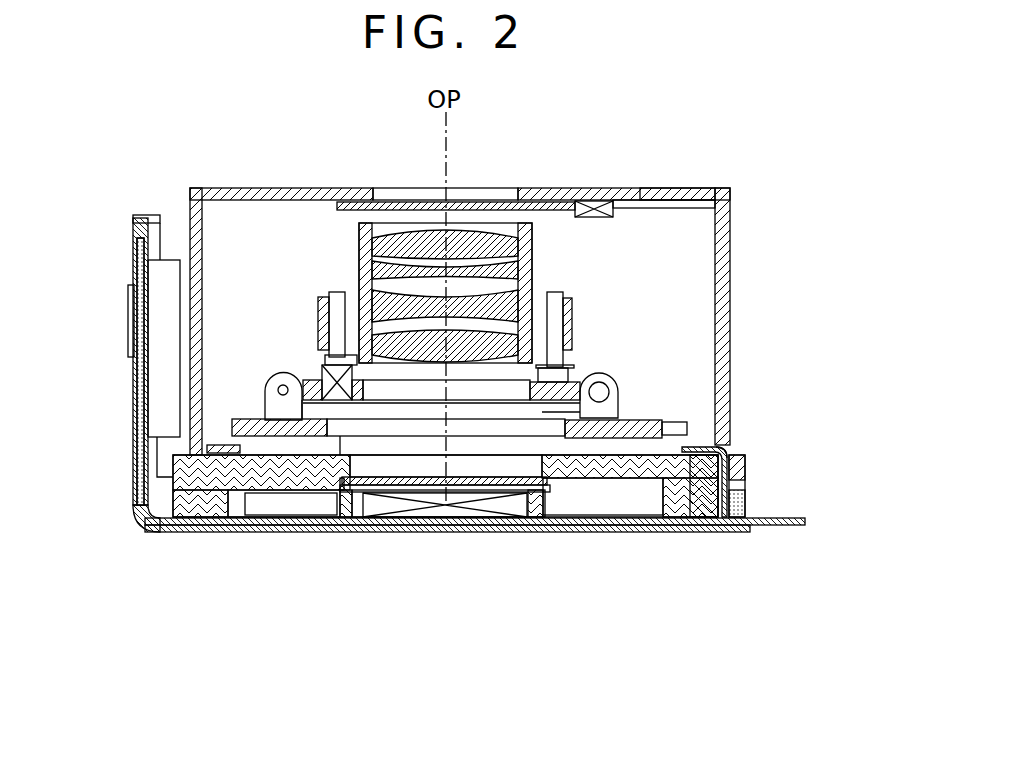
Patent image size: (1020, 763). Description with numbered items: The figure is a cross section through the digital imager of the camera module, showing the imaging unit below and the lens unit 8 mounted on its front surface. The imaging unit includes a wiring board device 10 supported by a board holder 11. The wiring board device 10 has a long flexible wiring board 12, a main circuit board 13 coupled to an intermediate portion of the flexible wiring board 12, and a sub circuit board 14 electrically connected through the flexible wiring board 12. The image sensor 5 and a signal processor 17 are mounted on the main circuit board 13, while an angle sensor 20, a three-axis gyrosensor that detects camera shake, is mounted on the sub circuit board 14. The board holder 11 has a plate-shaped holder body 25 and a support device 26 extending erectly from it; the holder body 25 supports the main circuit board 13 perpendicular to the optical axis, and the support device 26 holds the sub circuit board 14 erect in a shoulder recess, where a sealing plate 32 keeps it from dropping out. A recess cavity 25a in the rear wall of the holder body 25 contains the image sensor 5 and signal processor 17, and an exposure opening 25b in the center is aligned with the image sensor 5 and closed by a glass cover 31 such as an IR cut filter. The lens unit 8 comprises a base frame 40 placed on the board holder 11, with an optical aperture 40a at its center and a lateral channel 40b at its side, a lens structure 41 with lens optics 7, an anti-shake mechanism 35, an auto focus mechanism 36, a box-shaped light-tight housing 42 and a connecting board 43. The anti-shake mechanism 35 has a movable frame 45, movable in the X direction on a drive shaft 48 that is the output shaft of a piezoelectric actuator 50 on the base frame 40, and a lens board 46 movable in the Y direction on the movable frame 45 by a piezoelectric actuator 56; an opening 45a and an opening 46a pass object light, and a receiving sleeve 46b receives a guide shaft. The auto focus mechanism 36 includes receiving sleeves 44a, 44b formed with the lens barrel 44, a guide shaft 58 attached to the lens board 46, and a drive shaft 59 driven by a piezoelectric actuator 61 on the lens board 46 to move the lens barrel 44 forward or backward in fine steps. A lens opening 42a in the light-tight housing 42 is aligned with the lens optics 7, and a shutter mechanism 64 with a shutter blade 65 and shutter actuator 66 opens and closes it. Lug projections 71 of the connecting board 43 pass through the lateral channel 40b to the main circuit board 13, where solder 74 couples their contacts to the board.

The image sensor 5 is at (445, 492).
The lens optics 7 is at (413, 232).
The lens unit 8 is at (663, 180).
The wiring board device 10 is at (530, 548).
The board holder 11 is at (160, 493).
The flexible wiring board 12 is at (780, 525).
The main circuit board 13 is at (172, 532).
The sub circuit board 14 is at (135, 440).
The signal processor 17 is at (283, 505).
The angle sensor 20 is at (160, 383).
The holder body 25 is at (200, 517).
The recess cavity 25a is at (645, 517).
The exposure opening 25b is at (345, 488).
The support device 26 is at (146, 215).
The glass cover 31 is at (462, 517).
The sealing plate 32 is at (128, 318).
The anti-shake mechanism 35 is at (625, 358).
The auto focus mechanism 36 is at (600, 292).
The base frame 40 is at (690, 517).
The optical aperture 40a is at (506, 508).
The lateral channel 40b is at (745, 468).
The lens structure 41 is at (343, 243).
The light-tight housing 42 is at (728, 264).
The lens opening 42a is at (383, 188).
The connecting board 43 is at (712, 449).
The lens barrel 44 is at (532, 295).
The receiving sleeve 44a is at (318, 305).
The receiving sleeve 44b is at (572, 332).
The movable frame 45 is at (258, 418).
The opening 45a is at (340, 470).
The lens board 46 is at (322, 375).
The opening 46a is at (388, 436).
The receiving sleeve 46b is at (268, 376).
The drive shaft 48 is at (672, 424).
The piezoelectric actuator 50 is at (548, 492).
The piezoelectric actuator 56 is at (600, 392).
The guide shaft 58 is at (557, 300).
The drive shaft 59 is at (336, 300).
The piezoelectric actuator 61 is at (345, 380).
The shutter mechanism 64 is at (615, 209).
The shutter blade 65 is at (513, 202).
The shutter actuator 66 is at (592, 200).
The lug projection 71 is at (732, 455).
The solder 74 is at (745, 505).